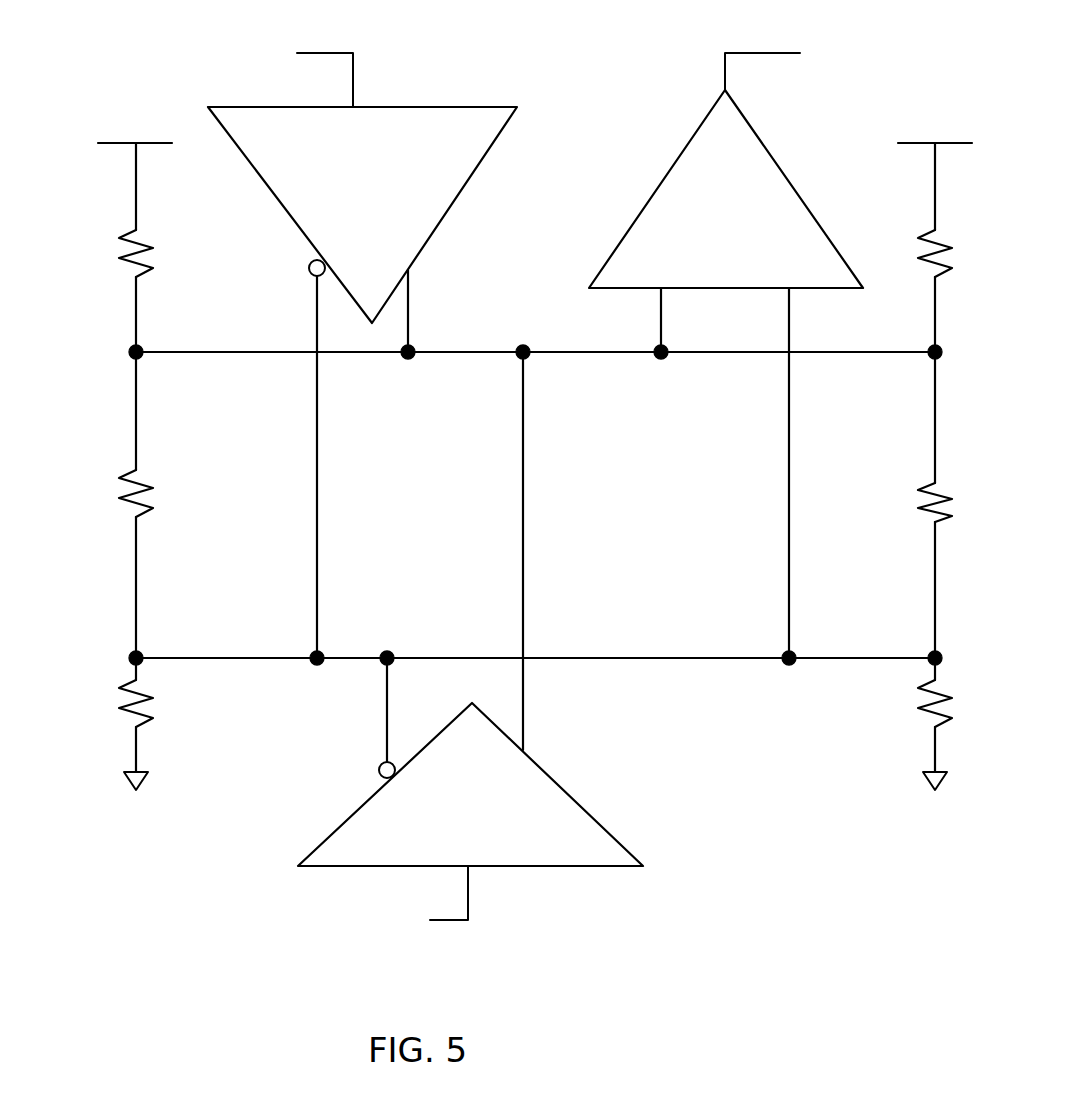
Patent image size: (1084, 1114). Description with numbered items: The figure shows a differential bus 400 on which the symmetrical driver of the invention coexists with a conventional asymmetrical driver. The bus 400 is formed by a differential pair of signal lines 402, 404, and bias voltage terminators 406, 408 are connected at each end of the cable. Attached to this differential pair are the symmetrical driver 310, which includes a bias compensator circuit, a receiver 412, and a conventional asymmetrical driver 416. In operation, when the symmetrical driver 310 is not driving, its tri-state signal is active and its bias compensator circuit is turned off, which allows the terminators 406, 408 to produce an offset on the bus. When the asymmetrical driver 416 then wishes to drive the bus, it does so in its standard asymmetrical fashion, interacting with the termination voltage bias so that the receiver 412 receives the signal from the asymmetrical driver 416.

The differential bus 400 is at (757, 955).
The symmetrical driver 310 is at (452, 174).
The signal line 402 is at (228, 355).
The signal line 404 is at (223, 662).
The bias voltage terminator 406 is at (110, 840).
The bias voltage terminator 408 is at (903, 840).
The receiver 412 is at (772, 170).
The asymmetrical driver 416 is at (605, 830).